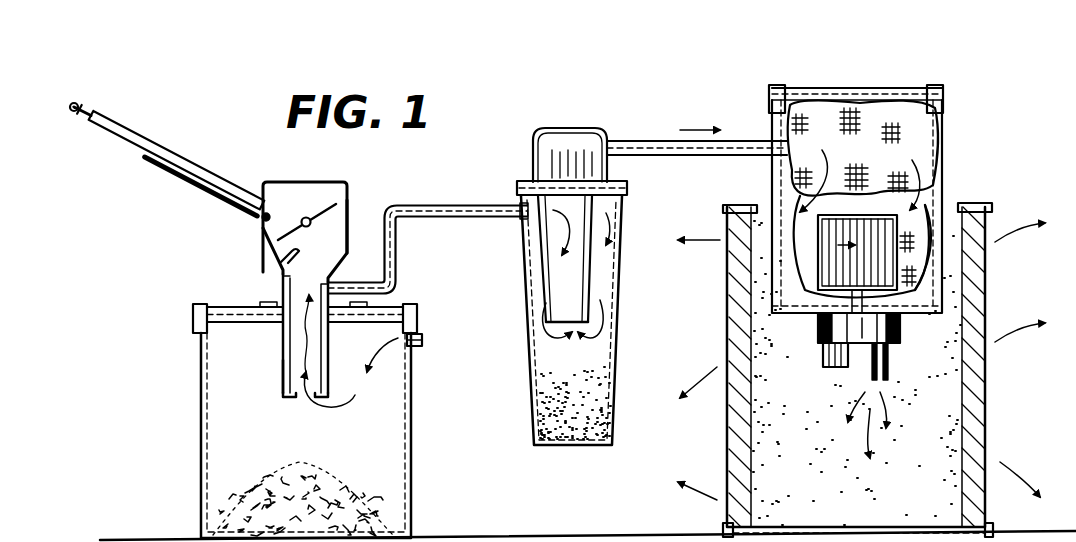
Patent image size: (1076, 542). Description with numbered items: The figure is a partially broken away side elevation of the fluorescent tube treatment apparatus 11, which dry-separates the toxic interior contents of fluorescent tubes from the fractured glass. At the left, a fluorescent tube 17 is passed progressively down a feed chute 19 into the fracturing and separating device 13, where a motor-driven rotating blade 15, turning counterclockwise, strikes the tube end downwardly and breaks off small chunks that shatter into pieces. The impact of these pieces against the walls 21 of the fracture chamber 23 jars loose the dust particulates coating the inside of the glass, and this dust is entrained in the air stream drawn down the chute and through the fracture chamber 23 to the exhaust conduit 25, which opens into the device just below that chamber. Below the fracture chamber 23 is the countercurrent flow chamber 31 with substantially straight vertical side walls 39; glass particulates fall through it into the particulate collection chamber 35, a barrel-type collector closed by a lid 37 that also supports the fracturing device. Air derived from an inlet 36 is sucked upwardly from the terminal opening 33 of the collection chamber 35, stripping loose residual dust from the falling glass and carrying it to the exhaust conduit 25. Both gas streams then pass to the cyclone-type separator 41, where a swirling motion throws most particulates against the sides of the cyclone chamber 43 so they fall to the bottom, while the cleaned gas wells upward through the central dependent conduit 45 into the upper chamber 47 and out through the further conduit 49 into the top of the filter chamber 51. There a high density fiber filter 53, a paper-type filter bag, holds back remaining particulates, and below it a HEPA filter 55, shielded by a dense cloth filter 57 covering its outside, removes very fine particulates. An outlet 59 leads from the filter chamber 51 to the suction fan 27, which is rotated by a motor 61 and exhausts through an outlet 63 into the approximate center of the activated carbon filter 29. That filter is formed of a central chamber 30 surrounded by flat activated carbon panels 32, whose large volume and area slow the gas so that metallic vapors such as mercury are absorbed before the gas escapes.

The apparatus 11 is at (479, 351).
The fracturing and separating device 13 is at (262, 237).
The rotating blade 15 is at (322, 205).
The fluorescent tube 17 is at (120, 128).
The feed chute 19 is at (196, 166).
The walls of the fracture chamber 21 is at (278, 262).
The fracture chamber 23 is at (350, 215).
The exhaust conduit 25 is at (447, 206).
The suction fan 27 is at (900, 327).
The activated carbon filter 29 is at (724, 440).
The central chamber 30 is at (872, 502).
The countercurrent flow chamber 31 is at (285, 350).
The activated carbon panels 32 is at (738, 410).
The terminal opening 33 is at (294, 397).
The particulate collection chamber 35 is at (415, 490).
The inlet 36 is at (420, 341).
The lid 37 is at (395, 307).
The side walls 39 is at (283, 370).
The cyclone-type separator 41 is at (520, 230).
The cyclone chamber 43 is at (585, 353).
The central dependent conduit 45 is at (582, 288).
The upper chamber 47 is at (563, 135).
The further conduit 49 is at (644, 145).
The filter chamber 51 is at (910, 90).
The high density fiber filter 53 is at (940, 130).
The HEPA filter 55 is at (915, 210).
The dense cloth filter 57 is at (900, 257).
The outlet 59 is at (818, 312).
The motor 61 is at (823, 352).
The outlet 63 is at (873, 362).